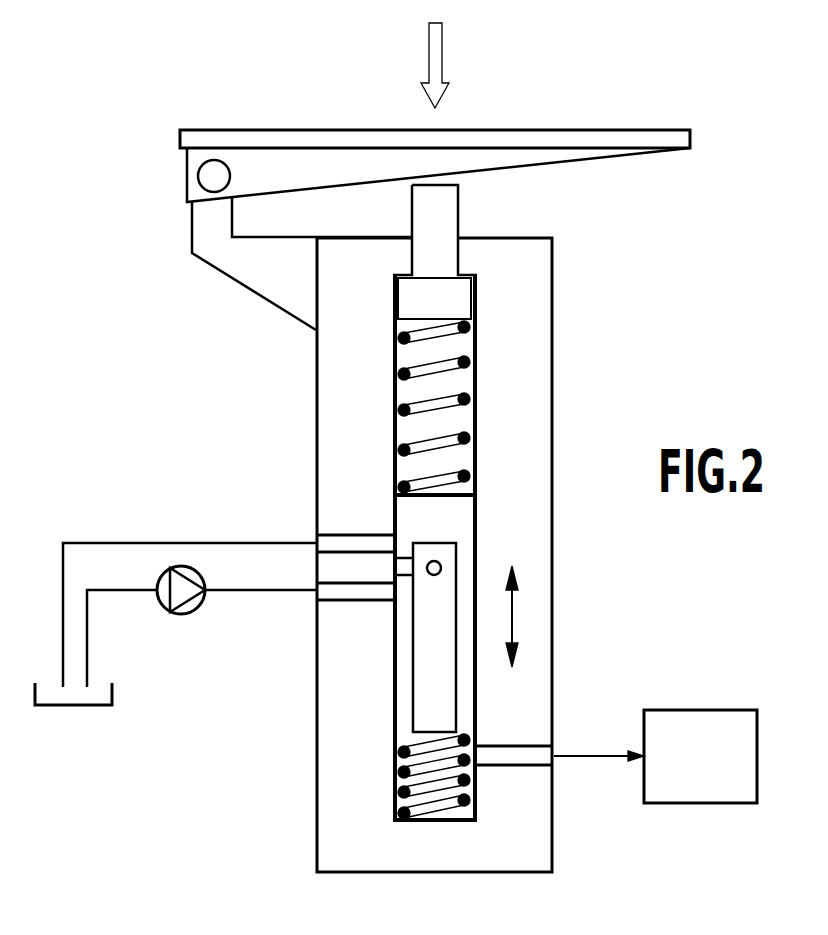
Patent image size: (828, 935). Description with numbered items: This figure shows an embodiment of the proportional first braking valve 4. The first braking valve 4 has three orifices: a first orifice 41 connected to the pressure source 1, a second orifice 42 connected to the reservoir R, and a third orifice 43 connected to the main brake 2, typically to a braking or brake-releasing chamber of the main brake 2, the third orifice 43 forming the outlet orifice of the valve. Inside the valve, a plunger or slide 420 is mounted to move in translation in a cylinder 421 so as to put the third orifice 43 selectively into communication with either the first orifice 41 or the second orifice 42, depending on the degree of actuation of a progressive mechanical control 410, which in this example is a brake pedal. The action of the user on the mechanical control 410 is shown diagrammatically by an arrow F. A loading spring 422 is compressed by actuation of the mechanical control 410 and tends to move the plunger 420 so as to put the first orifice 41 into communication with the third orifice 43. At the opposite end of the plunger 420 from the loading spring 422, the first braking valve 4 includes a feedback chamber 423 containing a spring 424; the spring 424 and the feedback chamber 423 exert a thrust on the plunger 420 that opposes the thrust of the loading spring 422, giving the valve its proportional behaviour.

The first braking valve 4 is at (107, 67).
The progressive mechanical control 410 is at (700, 134).
The arrow F is at (437, 50).
The plunger 420 is at (458, 517).
The cylinder 421 is at (513, 617).
The loading spring 422 is at (470, 325).
The feedback chamber 423 is at (457, 813).
The spring 424 is at (397, 771).
The second orifice 42 is at (345, 538).
The first orifice 41 is at (345, 596).
The third orifice 43 is at (522, 752).
The pressure source 1 is at (178, 613).
The reservoir R is at (115, 690).
The main brake 2 is at (700, 756).